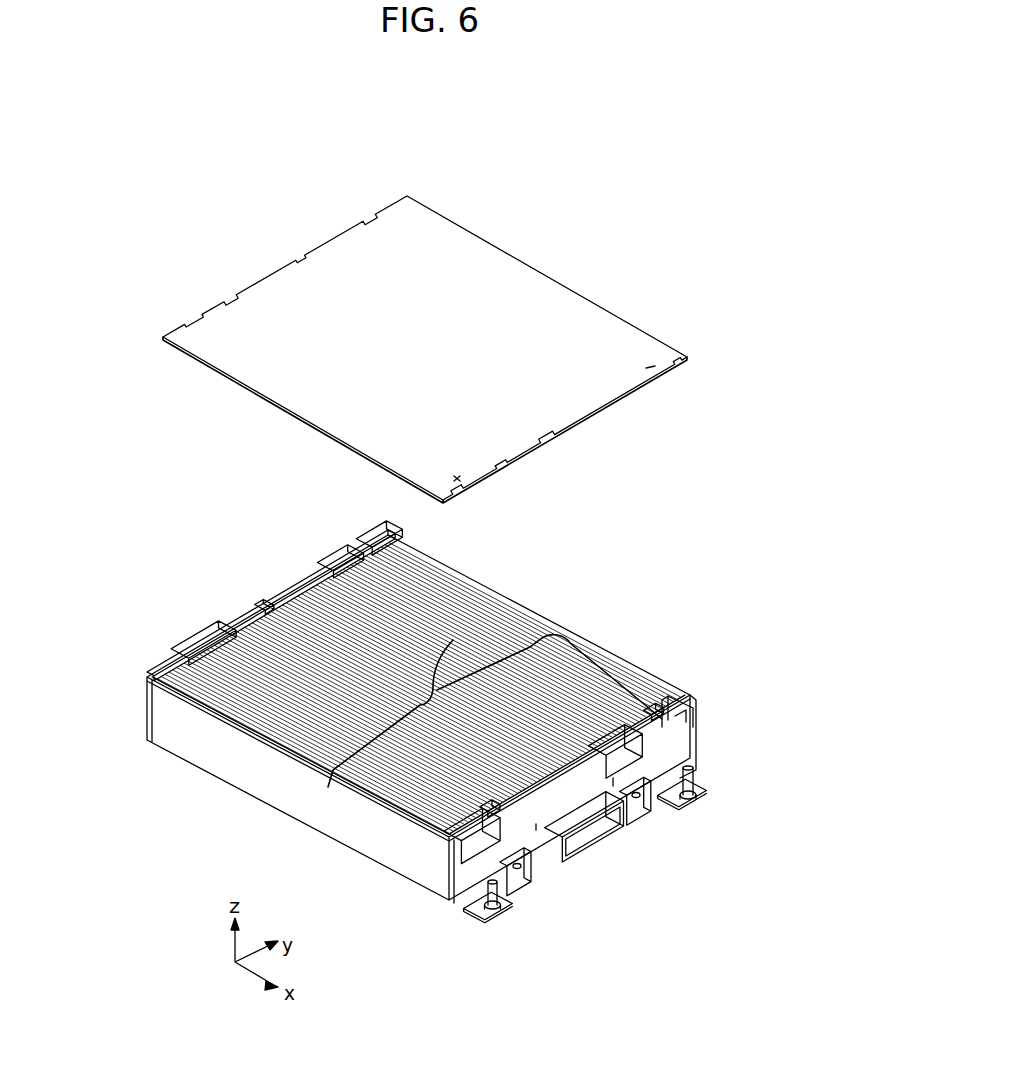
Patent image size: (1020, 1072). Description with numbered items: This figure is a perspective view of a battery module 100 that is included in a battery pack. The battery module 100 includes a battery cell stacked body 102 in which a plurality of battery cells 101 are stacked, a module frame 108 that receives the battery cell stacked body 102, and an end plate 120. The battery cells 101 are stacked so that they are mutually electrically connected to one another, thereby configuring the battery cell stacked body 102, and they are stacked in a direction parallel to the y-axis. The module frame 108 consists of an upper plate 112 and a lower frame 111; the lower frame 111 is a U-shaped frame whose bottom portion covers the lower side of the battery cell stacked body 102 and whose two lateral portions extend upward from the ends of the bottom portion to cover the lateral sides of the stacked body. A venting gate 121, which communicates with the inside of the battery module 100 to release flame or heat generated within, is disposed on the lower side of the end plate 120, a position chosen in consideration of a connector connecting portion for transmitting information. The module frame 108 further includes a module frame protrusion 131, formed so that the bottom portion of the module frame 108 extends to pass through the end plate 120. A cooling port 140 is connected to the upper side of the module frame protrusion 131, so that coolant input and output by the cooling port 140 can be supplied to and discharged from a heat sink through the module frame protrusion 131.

The battery module 100 is at (360, 152).
The module frame 108 is at (179, 429).
The upper plate 112 is at (303, 380).
The lower frame 111 is at (180, 715).
The battery cell 101 is at (592, 667).
The battery cell stacked body 102 is at (453, 640).
The end plate 120 is at (688, 742).
The venting gate 121 is at (610, 838).
The module frame protrusion 131 is at (513, 897).
The cooling port 140 is at (480, 900).